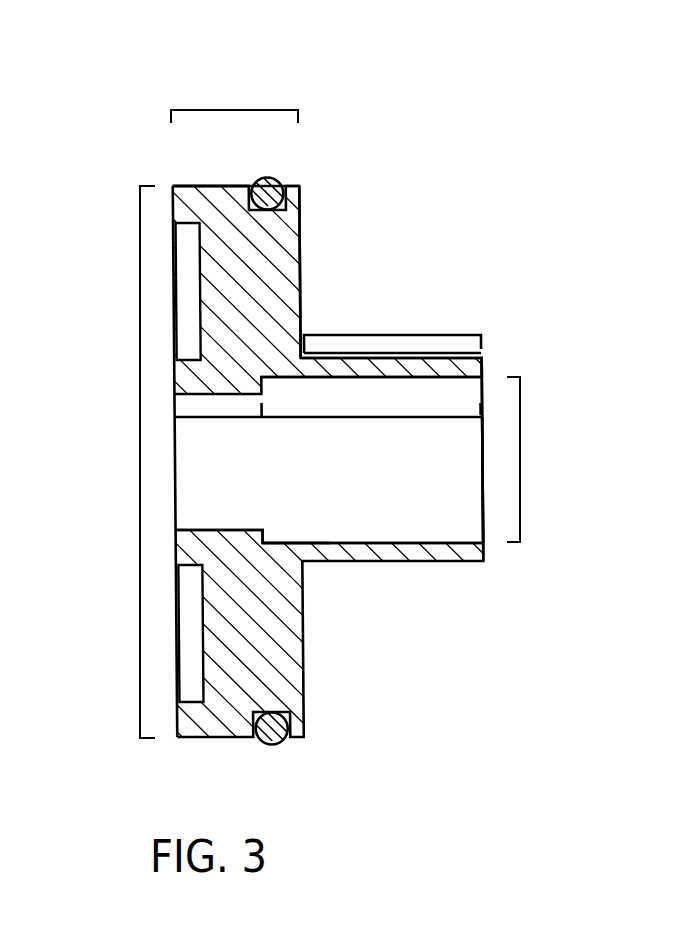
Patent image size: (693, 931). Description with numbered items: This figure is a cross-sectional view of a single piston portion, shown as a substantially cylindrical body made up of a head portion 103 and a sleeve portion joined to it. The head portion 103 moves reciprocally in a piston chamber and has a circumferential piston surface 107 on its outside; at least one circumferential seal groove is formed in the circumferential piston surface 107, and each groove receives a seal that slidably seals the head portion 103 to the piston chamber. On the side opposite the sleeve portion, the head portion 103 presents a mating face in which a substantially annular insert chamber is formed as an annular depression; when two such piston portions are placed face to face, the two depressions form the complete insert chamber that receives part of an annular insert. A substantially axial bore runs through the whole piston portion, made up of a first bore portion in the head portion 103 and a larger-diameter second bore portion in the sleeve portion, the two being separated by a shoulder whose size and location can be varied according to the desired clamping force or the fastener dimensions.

The head portion 103 is at (237, 109).
The circumferential piston surface 107 is at (210, 186).